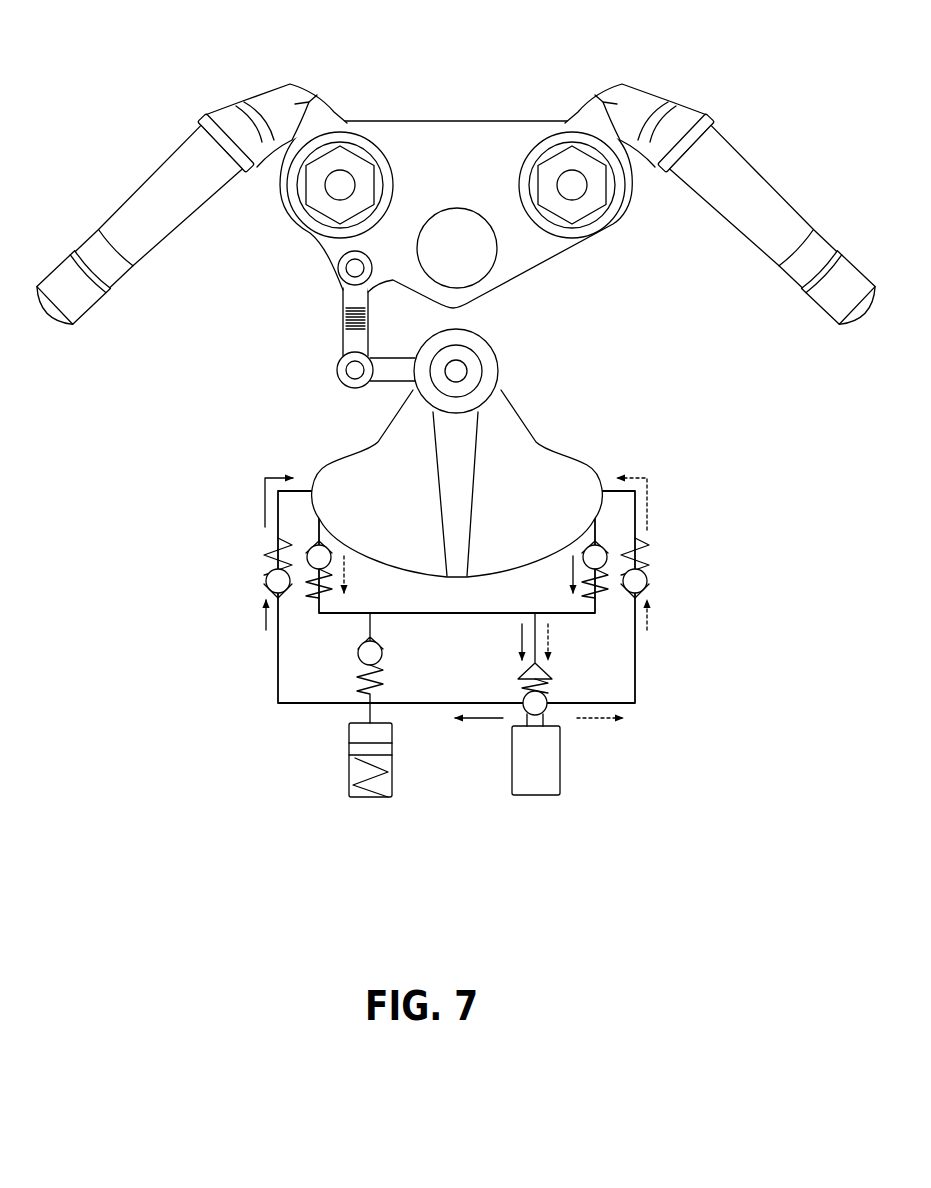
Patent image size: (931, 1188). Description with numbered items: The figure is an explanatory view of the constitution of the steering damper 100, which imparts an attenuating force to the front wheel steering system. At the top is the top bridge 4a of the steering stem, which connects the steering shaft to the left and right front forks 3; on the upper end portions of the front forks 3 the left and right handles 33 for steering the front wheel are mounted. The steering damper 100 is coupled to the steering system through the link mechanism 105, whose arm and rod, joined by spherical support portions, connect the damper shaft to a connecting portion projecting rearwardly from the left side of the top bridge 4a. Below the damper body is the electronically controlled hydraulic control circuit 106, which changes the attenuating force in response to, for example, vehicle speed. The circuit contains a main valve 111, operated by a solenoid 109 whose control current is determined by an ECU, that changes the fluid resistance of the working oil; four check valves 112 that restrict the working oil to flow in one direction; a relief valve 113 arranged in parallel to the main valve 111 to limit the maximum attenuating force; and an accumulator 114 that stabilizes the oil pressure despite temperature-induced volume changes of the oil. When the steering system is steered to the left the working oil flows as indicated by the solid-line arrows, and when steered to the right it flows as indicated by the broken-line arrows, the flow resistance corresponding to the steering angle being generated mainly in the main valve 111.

The top bridge 4a is at (456, 171).
The front fork 3 is at (309, 235).
The handle 33 is at (140, 188).
The steering damper 100 is at (584, 409).
The link mechanism 105 is at (340, 337).
The hydraulic control circuit 106 is at (640, 664).
The solenoid 109 is at (538, 797).
The main valve 111 is at (542, 695).
The check valve 112 is at (266, 580).
The relief valve 113 is at (384, 661).
The accumulator 114 is at (360, 798).